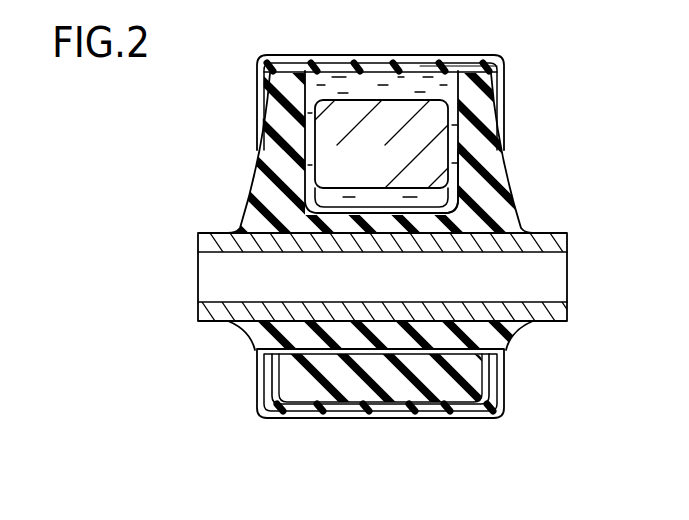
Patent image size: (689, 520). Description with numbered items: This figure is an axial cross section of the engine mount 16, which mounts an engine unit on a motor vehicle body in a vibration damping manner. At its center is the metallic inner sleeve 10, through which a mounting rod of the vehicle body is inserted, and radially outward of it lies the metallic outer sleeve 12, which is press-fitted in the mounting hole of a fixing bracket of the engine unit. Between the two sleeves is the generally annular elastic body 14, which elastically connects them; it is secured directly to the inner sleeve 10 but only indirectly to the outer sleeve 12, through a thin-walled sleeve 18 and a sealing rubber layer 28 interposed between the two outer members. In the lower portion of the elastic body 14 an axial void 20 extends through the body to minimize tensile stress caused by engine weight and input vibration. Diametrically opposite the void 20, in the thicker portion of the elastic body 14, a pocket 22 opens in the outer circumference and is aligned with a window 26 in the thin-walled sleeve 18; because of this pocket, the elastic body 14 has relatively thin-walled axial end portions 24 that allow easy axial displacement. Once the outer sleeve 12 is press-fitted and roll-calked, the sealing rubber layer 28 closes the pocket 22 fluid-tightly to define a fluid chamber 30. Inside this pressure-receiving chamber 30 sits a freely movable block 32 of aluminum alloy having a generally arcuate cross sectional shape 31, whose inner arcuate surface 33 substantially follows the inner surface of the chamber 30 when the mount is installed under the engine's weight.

The inner sleeve 10 is at (210, 308).
The outer sleeve 12 is at (337, 417).
The elastic body 14 is at (232, 199).
The engine mount 16 is at (530, 449).
The thin-walled sleeve 18 is at (468, 408).
The axial void 20 is at (472, 351).
The pocket 22 is at (457, 192).
The axial end portions 24 is at (280, 110).
The window 26 is at (312, 70).
The sealing rubber layer 28 is at (455, 67).
The fluid chamber 30 is at (306, 135).
The arcuate cross sectional shape 31 is at (370, 83).
The movable block 32 is at (397, 112).
The inner arcuate surface 33 is at (364, 190).